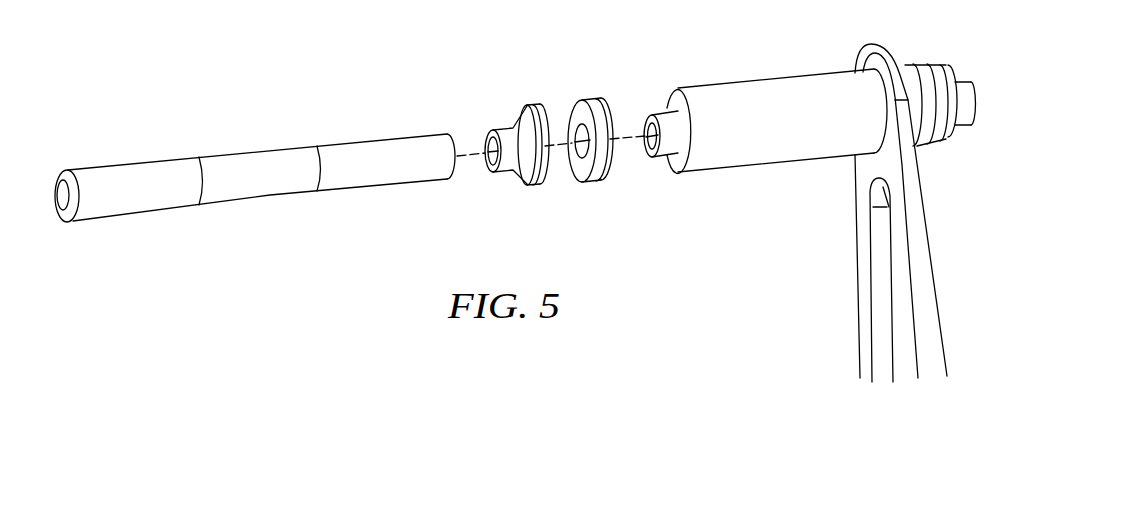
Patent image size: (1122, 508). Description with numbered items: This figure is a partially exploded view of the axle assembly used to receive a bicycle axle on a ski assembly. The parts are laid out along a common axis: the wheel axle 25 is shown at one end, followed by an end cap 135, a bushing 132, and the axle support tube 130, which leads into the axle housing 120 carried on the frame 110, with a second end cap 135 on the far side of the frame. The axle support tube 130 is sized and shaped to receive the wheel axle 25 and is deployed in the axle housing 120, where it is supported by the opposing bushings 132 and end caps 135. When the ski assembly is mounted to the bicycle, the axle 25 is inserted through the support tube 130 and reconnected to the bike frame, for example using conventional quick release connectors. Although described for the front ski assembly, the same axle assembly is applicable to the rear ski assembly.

The wheel axle 25 is at (233, 157).
The frame 110 is at (860, 198).
The axle housing 120 is at (768, 83).
The axle support tube 130 is at (638, 114).
The bushing 132 is at (582, 102).
The end cap 135 is at (505, 118).